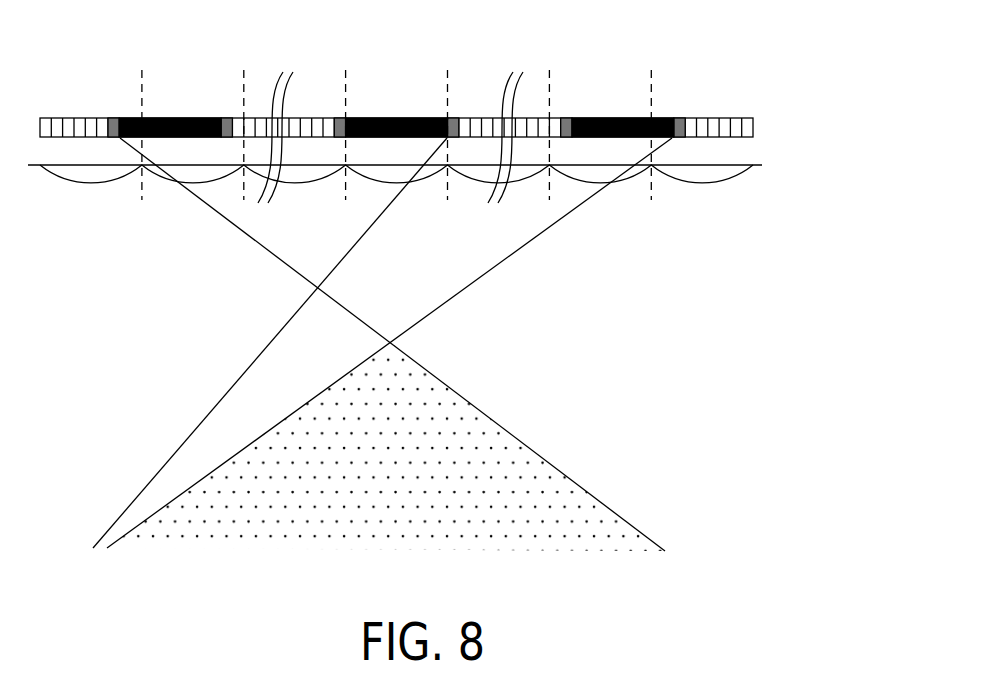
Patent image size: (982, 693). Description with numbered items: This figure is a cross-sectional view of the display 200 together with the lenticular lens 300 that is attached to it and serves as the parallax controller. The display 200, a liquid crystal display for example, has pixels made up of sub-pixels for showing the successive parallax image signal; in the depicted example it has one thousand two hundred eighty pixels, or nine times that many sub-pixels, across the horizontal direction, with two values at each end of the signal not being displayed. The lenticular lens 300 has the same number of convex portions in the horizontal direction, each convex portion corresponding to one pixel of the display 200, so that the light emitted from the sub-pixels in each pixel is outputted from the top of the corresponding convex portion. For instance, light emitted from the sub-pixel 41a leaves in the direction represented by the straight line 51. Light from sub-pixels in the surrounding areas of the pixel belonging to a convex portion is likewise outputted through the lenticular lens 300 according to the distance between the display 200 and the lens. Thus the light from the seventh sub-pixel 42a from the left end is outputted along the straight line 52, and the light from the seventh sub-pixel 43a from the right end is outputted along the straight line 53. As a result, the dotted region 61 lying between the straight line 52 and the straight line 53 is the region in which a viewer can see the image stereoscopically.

The display 200 is at (755, 128).
The lenticular lens 300 is at (752, 167).
The sub-pixel 41a is at (442, 117).
The seventh sub-pixel from the left end 42a is at (127, 117).
The seventh sub-pixel from the right end 43a is at (670, 117).
The straight line 51 is at (208, 415).
The straight line 52 is at (360, 312).
The straight line 53 is at (502, 262).
The region 61 is at (523, 465).